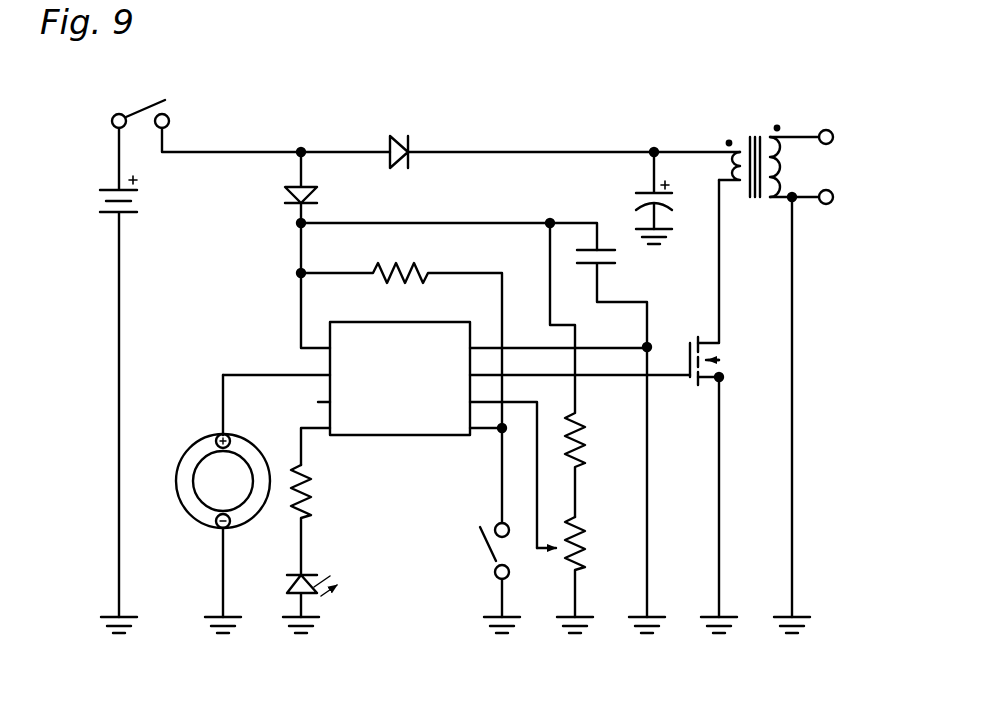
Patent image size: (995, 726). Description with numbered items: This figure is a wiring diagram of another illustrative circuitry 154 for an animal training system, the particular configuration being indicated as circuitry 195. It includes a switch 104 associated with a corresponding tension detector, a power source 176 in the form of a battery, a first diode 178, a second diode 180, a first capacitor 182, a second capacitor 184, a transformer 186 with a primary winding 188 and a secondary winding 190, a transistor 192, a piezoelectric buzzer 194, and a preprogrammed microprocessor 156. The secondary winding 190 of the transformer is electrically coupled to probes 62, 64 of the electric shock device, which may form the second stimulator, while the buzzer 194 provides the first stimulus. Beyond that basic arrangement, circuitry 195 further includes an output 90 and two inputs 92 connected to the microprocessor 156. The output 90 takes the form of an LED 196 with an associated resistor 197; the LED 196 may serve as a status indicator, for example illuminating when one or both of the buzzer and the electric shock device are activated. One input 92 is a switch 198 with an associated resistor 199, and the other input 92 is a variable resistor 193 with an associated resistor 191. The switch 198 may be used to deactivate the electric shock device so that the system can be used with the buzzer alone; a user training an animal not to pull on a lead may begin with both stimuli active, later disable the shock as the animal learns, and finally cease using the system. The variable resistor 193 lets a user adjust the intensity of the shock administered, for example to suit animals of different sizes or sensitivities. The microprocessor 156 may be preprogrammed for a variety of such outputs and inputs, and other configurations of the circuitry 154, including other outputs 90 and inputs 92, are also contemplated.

The circuitry 154 is at (672, 41).
The circuitry 195 is at (644, 91).
The switch 104 is at (136, 108).
The power source 176 is at (113, 186).
The first diode 178 is at (410, 142).
The second diode 180 is at (288, 187).
The first capacitor 182 is at (606, 266).
The second capacitor 184 is at (648, 190).
The transformer 186 is at (740, 194).
The primary winding 188 is at (737, 148).
The secondary winding 190 is at (771, 130).
The probe 62 is at (833, 126).
The probe 64 is at (833, 207).
The preprogrammed microprocessor 156 is at (394, 378).
The resistor 199 is at (400, 270).
The resistor 191 is at (582, 432).
The transistor 192 is at (688, 353).
The piezoelectric buzzer 194 is at (176, 486).
The resistor 197 is at (311, 484).
The LED 196 is at (312, 573).
The output 90 is at (294, 572).
The inputs 92 is at (482, 544).
The switch 198 is at (494, 566).
The variable resistor 193 is at (580, 560).